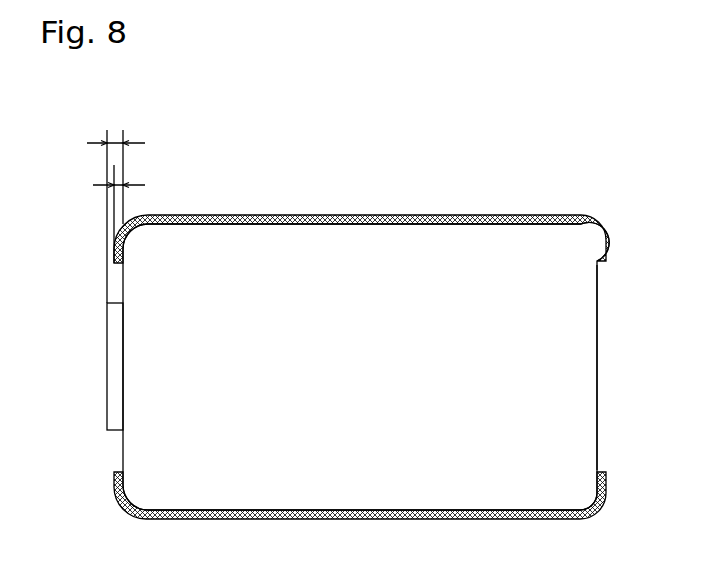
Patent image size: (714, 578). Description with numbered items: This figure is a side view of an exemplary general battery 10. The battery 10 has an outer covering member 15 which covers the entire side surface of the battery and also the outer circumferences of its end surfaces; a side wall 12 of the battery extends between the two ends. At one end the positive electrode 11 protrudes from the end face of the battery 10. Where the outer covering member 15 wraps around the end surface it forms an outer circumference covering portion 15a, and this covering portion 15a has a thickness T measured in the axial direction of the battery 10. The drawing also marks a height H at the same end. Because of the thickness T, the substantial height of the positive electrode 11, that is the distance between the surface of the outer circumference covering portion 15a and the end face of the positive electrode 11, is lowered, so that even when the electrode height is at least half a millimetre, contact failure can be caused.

The battery 10 is at (537, 347).
The positive electrode 11 is at (117, 358).
The side wall 12 is at (597, 400).
The outer covering member 15 is at (428, 215).
The outer circumference covering portion 15a is at (118, 263).
The dimension H is at (113, 142).
The thickness T is at (120, 184).